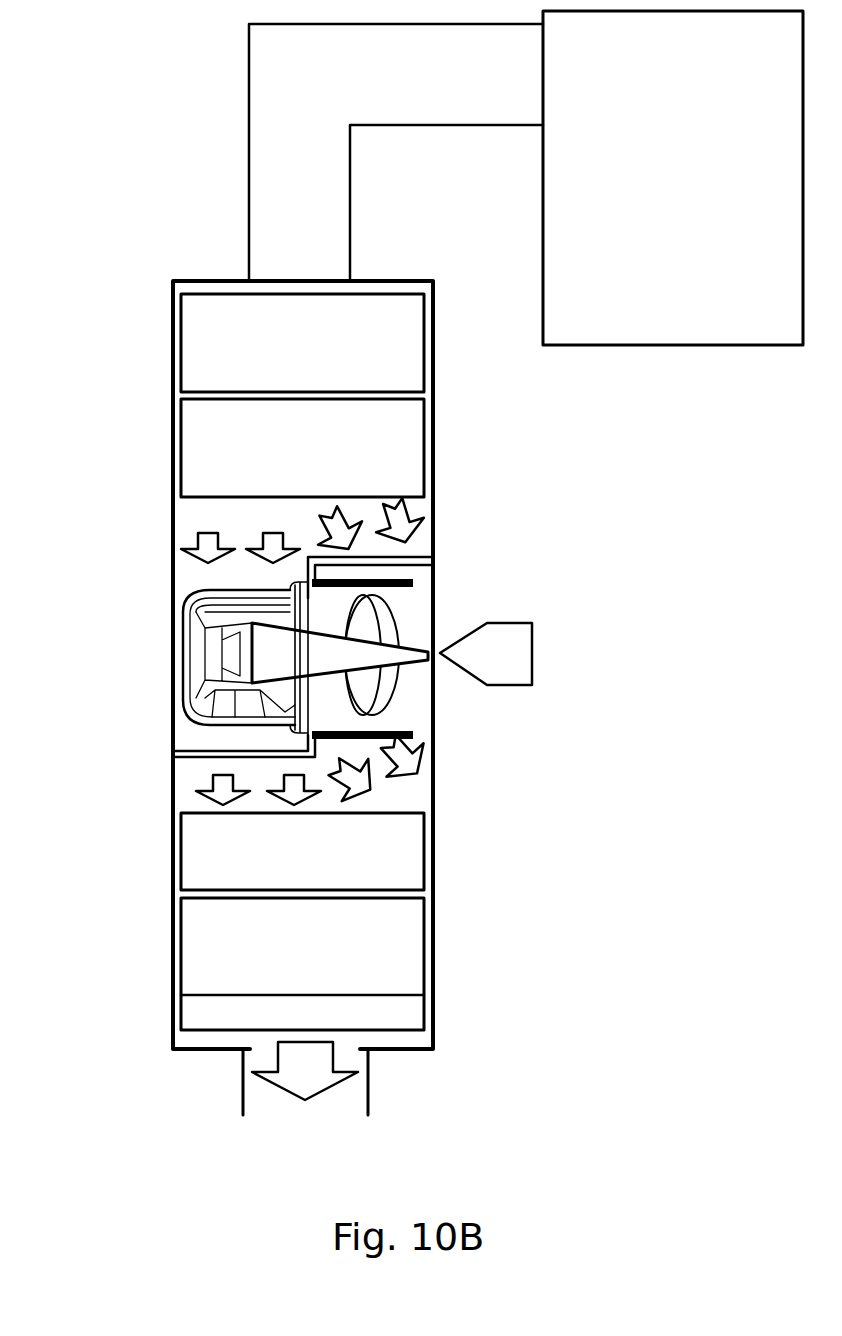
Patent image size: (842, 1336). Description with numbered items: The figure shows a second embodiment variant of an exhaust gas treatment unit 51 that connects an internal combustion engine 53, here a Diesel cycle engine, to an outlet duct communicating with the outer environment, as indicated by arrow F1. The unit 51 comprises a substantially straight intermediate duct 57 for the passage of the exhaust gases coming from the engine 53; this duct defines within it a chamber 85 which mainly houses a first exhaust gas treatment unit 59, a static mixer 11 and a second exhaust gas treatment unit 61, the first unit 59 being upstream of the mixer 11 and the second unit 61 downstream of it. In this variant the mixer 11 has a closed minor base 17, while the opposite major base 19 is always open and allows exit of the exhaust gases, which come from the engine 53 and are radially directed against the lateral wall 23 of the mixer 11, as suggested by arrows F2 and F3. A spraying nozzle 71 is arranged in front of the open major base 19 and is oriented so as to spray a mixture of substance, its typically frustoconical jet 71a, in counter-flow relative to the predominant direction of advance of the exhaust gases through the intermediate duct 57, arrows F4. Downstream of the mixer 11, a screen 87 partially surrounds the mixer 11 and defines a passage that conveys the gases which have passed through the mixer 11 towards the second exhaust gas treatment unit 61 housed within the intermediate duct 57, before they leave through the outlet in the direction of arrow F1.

The exhaust gas treatment unit 51 is at (124, 1083).
The internal combustion engine 53 is at (686, 197).
The intermediate duct 57 is at (72, 268).
The first exhaust gas treatment unit 59 is at (370, 437).
The second exhaust gas treatment unit 61 is at (410, 1018).
The static mixer 11 is at (183, 601).
The minor base 17 is at (176, 673).
The major base 19 is at (320, 600).
The lateral wall 23 is at (261, 734).
The spraying nozzle 71 is at (486, 671).
The jet of substance 71a is at (270, 671).
The chamber 85 is at (440, 540).
The screen 87 is at (412, 721).
The outlet flow arrow F1 is at (340, 1083).
The exhaust gas flow arrows F2 is at (425, 512).
The exhaust gas flow arrows F3 is at (430, 745).
The counter-flow spray arrows F4 is at (400, 598).